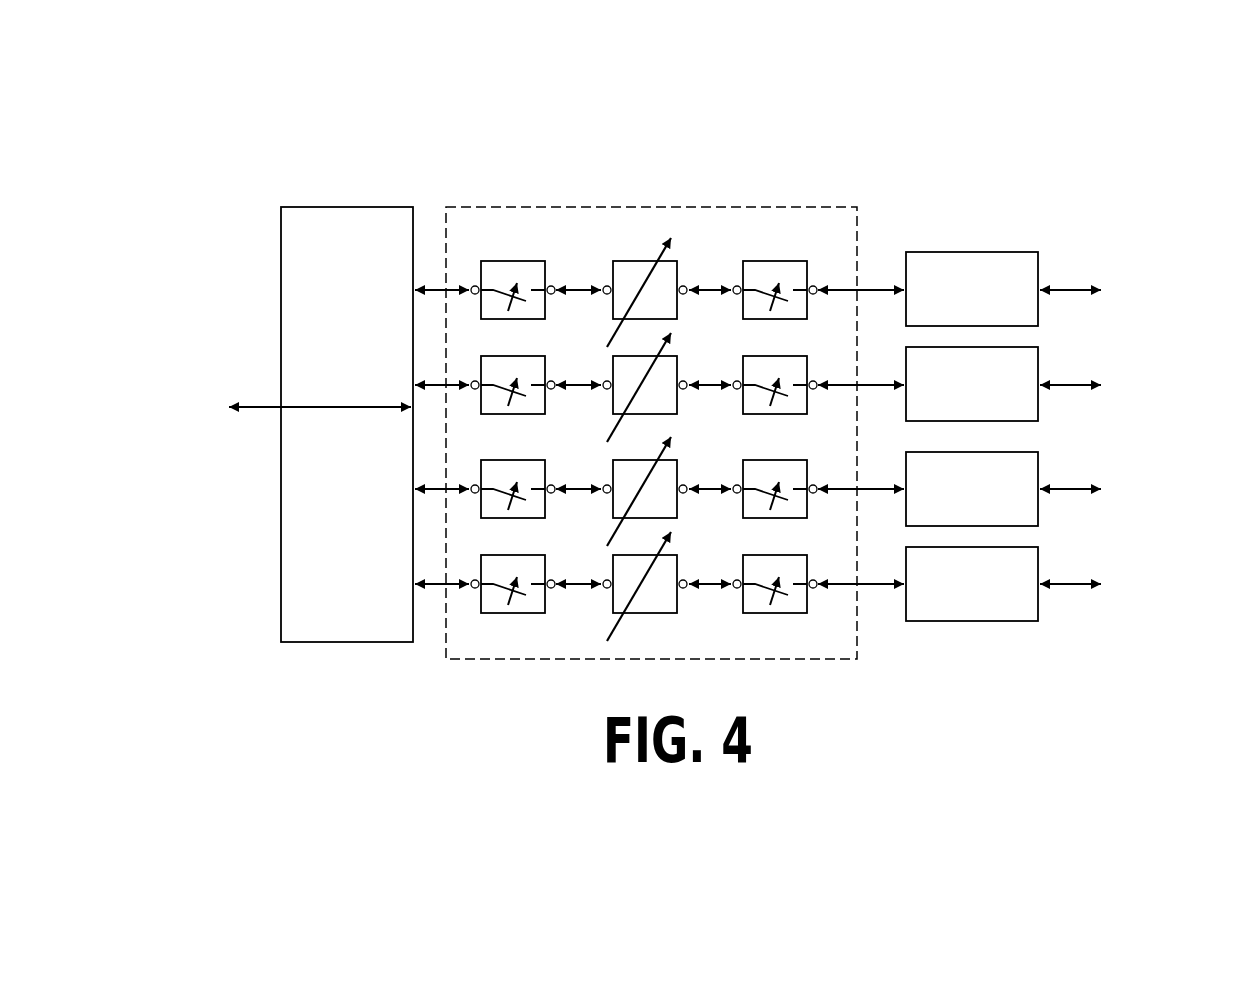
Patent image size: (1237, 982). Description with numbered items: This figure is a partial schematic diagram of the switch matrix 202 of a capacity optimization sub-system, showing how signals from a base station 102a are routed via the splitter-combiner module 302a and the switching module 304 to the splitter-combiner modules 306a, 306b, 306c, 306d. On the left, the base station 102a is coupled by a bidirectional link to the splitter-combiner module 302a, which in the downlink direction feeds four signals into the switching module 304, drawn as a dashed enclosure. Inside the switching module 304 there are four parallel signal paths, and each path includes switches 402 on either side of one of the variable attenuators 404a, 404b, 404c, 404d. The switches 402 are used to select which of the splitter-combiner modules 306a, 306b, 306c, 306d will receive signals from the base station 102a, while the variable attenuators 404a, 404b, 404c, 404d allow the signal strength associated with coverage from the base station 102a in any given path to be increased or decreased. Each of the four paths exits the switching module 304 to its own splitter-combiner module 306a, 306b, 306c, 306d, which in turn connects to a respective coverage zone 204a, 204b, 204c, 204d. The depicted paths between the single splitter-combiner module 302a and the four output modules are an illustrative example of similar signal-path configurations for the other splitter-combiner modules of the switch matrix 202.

The switch matrix 202 is at (486, 60).
The base station 102a is at (284, 400).
The splitter-combiner module 302a is at (347, 424).
The switching module 304 is at (572, 206).
The switches 402 is at (524, 324).
The variable attenuator 404a is at (677, 264).
The variable attenuator 404b is at (677, 413).
The variable attenuator 404c is at (677, 514).
The variable attenuator 404d is at (658, 613).
The splitter-combiner module 306a is at (972, 289).
The splitter-combiner module 306b is at (972, 384).
The splitter-combiner module 306c is at (972, 489).
The splitter-combiner module 306d is at (972, 584).
The coverage zone 204a is at (1137, 288).
The coverage zone 204b is at (1137, 383).
The coverage zone 204c is at (1137, 487).
The coverage zone 204d is at (1137, 582).